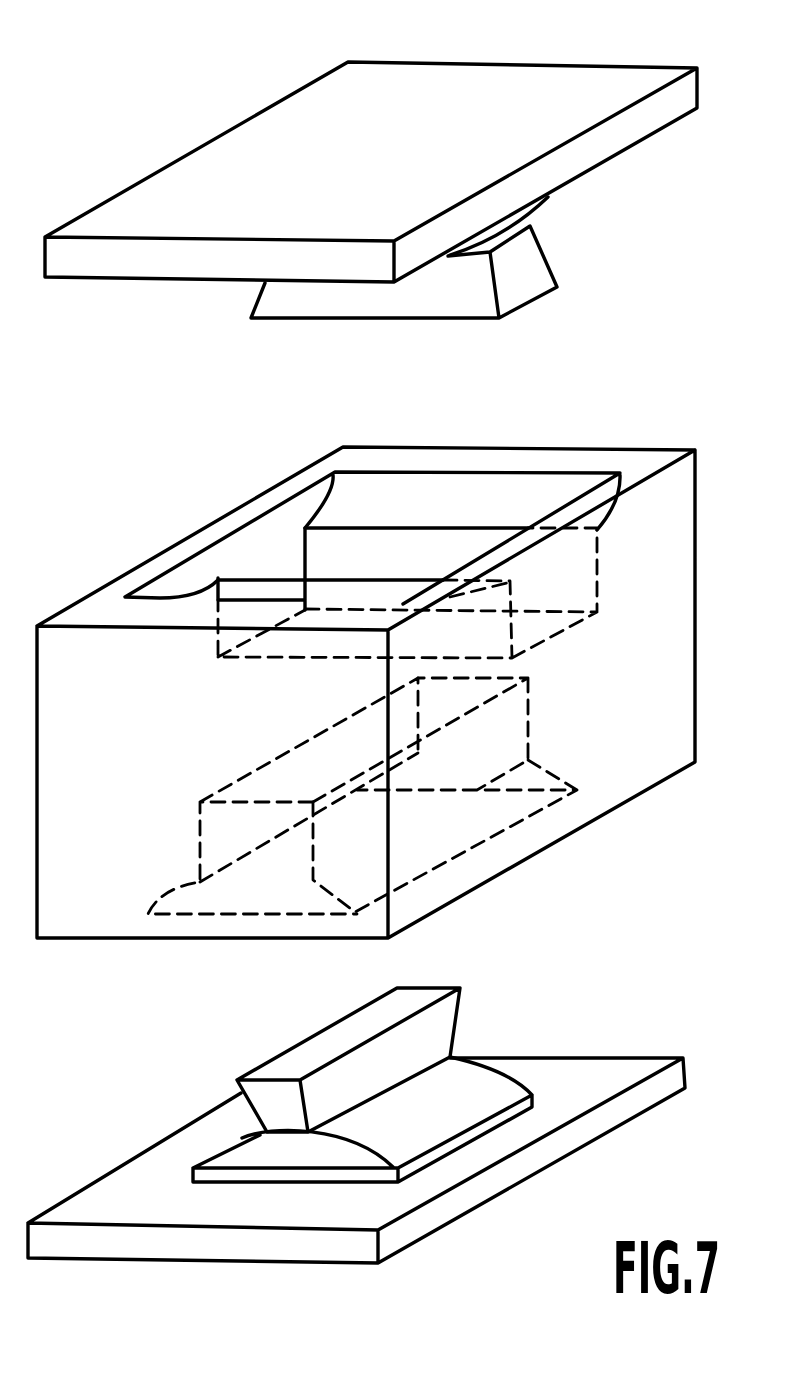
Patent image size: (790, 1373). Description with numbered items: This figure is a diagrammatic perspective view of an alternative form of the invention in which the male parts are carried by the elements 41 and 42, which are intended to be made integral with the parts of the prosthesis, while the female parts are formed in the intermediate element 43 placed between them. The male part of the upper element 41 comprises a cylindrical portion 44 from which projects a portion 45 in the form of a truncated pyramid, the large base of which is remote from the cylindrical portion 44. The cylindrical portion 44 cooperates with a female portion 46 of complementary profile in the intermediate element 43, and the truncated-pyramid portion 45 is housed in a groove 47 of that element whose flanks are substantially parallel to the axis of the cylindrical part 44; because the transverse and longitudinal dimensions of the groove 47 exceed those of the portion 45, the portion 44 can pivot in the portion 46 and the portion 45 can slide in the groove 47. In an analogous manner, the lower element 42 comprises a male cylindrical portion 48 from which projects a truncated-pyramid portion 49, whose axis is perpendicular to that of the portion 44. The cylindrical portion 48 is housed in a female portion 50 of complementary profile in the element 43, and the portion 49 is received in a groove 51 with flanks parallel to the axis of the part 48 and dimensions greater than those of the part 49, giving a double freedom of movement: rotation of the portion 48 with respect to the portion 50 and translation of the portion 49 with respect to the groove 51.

The element 41 is at (371, 141).
The element 42 is at (356, 1194).
The intermediate element 43 is at (387, 692).
The cylindrical portion 44 is at (560, 225).
The portion in the form of a truncated pyramid 45 is at (458, 293).
The female portion 46 is at (372, 498).
The groove 47 is at (380, 544).
The male cylindrical portion 48 is at (425, 1082).
The portion in the form of a truncated pyramid 49 is at (412, 1035).
The female portion 50 is at (442, 838).
The groove 51 is at (282, 838).